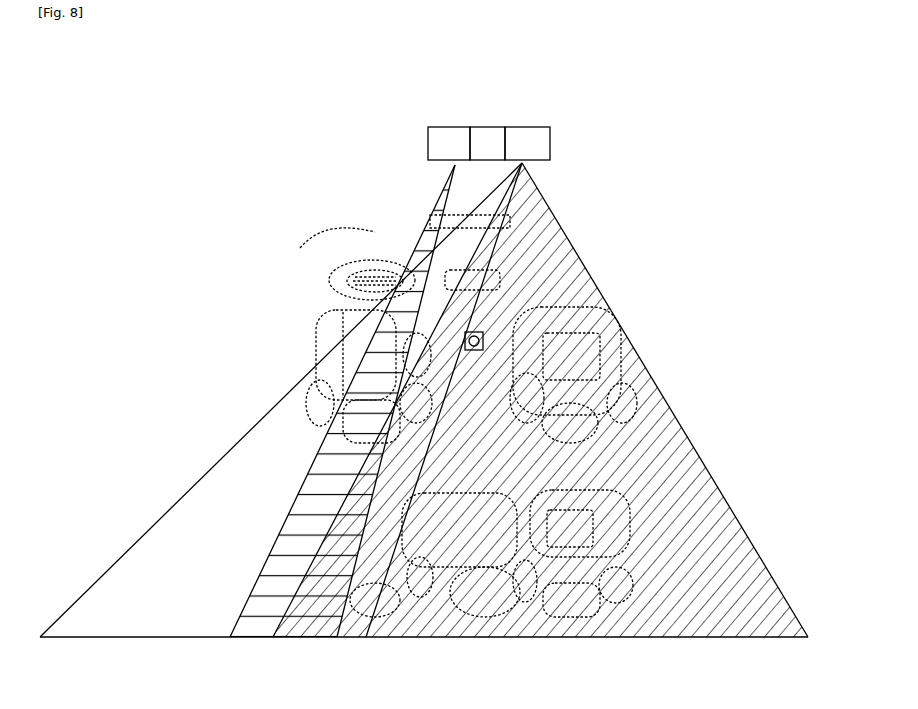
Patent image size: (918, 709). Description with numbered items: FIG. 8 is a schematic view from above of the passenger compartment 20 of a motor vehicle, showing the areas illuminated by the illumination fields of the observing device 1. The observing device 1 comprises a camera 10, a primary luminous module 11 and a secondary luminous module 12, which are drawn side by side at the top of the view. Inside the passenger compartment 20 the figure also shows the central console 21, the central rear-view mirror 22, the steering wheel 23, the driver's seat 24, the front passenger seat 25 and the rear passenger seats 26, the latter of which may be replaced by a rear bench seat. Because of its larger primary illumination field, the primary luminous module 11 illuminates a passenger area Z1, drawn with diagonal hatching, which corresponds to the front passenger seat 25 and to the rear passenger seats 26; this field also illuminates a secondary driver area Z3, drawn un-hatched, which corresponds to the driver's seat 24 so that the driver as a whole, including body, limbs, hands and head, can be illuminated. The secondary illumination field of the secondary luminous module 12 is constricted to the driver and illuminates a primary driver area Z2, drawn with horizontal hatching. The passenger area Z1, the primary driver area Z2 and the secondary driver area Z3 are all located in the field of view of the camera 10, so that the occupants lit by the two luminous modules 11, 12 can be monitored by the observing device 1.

The observing device 1 is at (489, 111).
The camera 10 is at (487, 143).
The primary luminous module 11 is at (492, 126).
The secondary luminous module 12 is at (449, 143).
The passenger compartment 20 is at (294, 187).
The central console 21 is at (428, 254).
The central rear-view mirror 22 is at (447, 213).
The steering wheel 23 is at (333, 281).
The driver's seat 24 is at (320, 327).
The front passenger seat 25 is at (633, 333).
The rear passenger seats 26 is at (466, 608).
The passenger area Z1 is at (540, 400).
The primary driver area Z2 is at (342, 401).
The secondary driver area Z3 is at (348, 378).